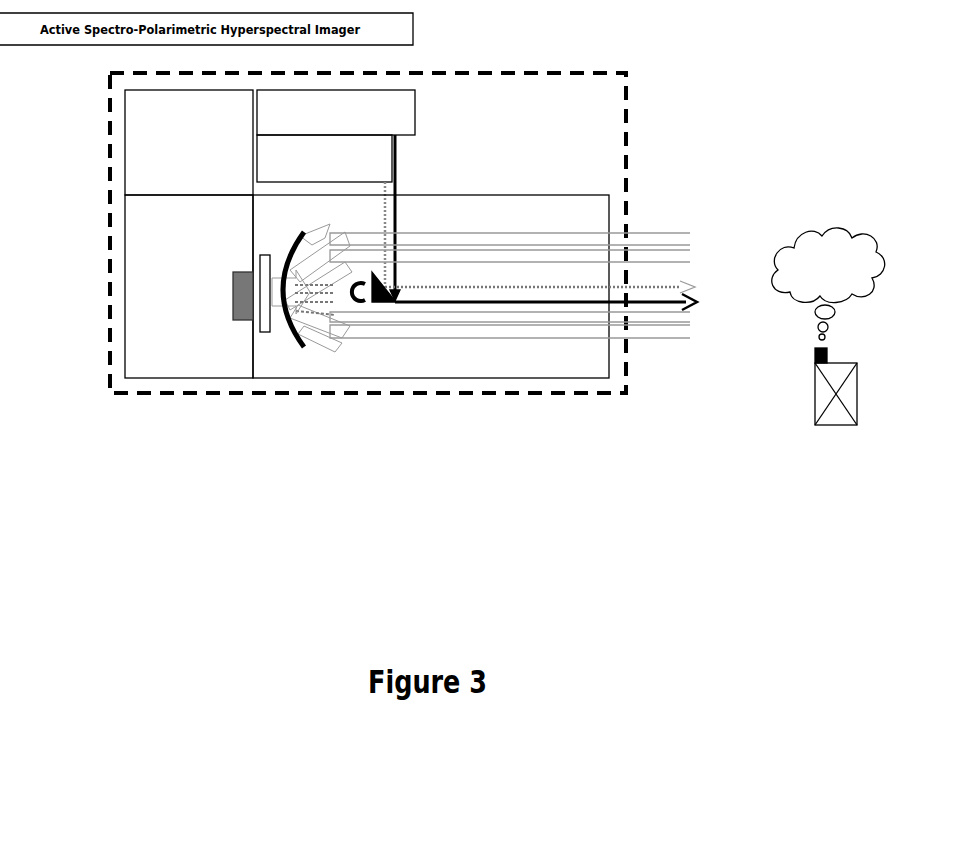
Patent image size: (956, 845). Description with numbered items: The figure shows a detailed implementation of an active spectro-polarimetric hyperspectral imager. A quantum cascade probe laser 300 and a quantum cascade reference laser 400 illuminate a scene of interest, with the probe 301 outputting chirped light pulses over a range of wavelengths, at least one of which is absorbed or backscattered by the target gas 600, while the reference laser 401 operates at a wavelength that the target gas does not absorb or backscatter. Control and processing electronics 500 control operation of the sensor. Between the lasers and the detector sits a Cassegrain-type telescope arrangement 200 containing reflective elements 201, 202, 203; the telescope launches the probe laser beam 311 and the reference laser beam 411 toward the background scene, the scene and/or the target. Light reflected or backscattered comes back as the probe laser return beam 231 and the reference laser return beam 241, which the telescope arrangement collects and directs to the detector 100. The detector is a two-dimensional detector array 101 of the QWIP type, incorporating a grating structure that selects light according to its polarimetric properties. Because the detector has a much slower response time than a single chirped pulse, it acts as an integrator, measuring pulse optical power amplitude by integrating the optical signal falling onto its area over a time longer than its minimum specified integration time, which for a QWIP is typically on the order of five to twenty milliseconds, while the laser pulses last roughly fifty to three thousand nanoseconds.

The detector 100 is at (189, 286).
The 2D detector array 101 is at (238, 308).
The telescope arrangement 200 is at (431, 286).
The reflective element 201 is at (306, 350).
The reflective element 202 is at (361, 306).
The reflective element 203 is at (386, 306).
The probe laser return beam 231 is at (558, 319).
The reference laser return beam 241 is at (536, 330).
The quantum cascade probe laser 300 is at (336, 112).
The probe 301 is at (398, 111).
The probe laser beam 311 is at (663, 293).
The quantum cascade reference laser 400 is at (324, 158).
The reference laser 401 is at (380, 154).
The reference laser beam 411 is at (646, 279).
The control and processing electronics 500 is at (189, 142).
The target gas 600 is at (828, 326).